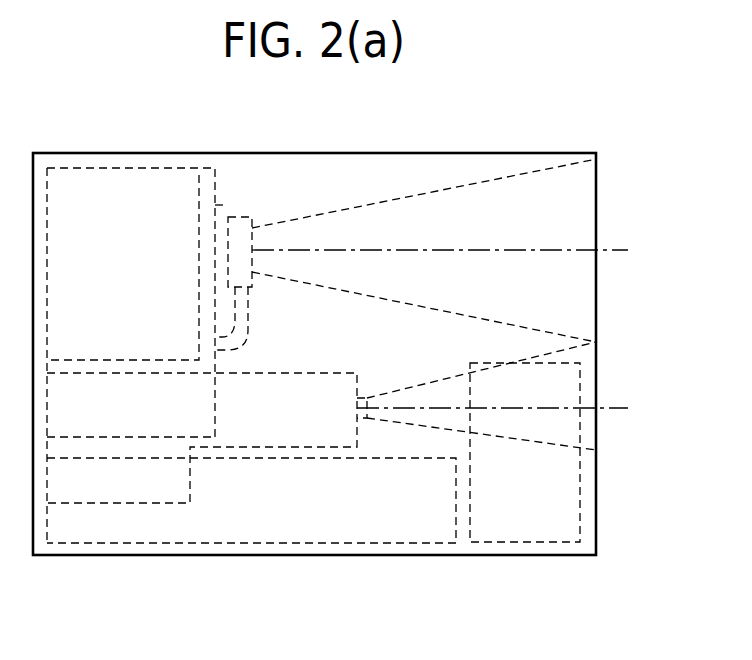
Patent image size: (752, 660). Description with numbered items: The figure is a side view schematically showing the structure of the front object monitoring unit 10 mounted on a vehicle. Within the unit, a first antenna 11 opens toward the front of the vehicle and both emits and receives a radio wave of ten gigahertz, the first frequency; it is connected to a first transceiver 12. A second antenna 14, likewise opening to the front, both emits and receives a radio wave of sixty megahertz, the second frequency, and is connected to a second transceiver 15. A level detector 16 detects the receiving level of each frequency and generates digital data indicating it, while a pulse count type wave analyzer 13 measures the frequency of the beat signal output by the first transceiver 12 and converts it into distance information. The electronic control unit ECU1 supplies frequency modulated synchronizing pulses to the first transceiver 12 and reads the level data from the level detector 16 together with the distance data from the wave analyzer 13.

The front object monitoring unit 10 is at (365, 151).
The first antenna 11 is at (484, 176).
The first transceiver 12 is at (220, 205).
The pulse count type wave analyzer 13 is at (210, 168).
The second antenna 14 is at (527, 372).
The second transceiver 15 is at (287, 430).
The level detector 16 is at (366, 550).
The electronic control unit ECU1 is at (568, 512).